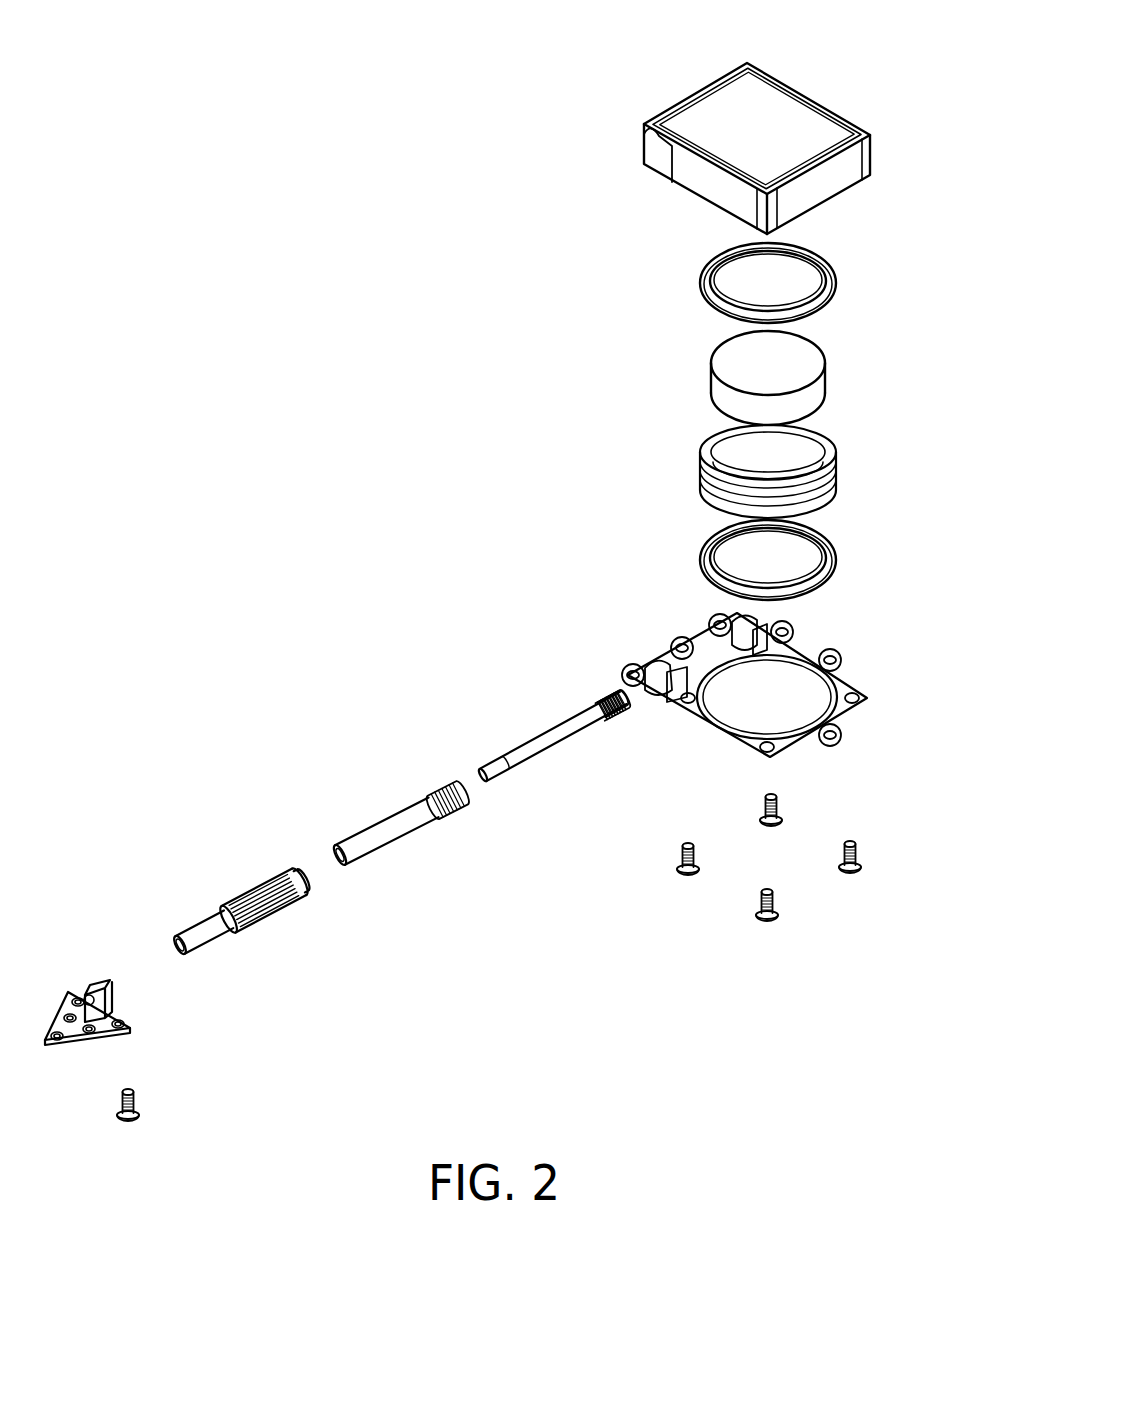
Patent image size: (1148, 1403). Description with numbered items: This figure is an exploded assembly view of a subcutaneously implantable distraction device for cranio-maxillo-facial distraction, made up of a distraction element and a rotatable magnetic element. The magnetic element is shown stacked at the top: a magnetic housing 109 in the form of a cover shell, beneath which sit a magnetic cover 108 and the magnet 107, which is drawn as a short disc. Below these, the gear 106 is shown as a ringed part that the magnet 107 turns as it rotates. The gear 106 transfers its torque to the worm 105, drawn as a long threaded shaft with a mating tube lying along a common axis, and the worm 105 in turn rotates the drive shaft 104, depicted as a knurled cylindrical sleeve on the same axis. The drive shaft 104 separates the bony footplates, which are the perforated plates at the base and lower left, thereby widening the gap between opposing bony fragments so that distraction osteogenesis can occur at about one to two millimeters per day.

The drive shaft 104 is at (263, 937).
The worm 105 is at (580, 745).
The gear 106 is at (845, 473).
The magnet 107 is at (827, 375).
The magnetic cover 108 is at (692, 548).
The magnetic housing 109 is at (773, 113).